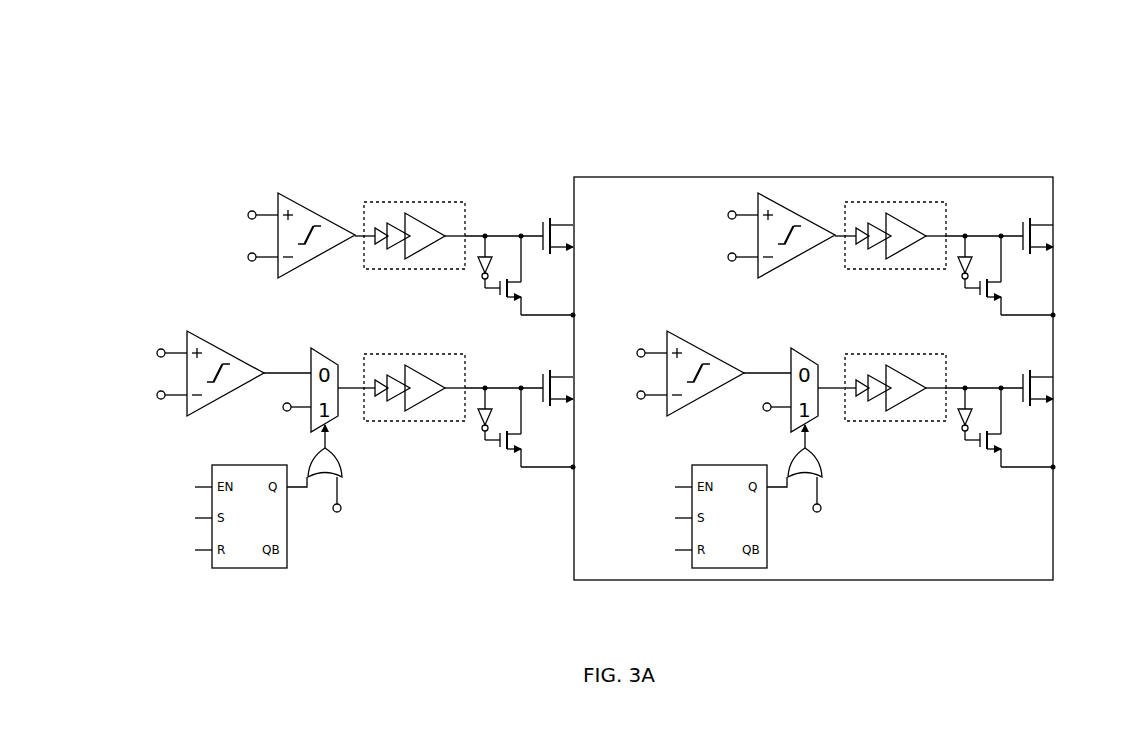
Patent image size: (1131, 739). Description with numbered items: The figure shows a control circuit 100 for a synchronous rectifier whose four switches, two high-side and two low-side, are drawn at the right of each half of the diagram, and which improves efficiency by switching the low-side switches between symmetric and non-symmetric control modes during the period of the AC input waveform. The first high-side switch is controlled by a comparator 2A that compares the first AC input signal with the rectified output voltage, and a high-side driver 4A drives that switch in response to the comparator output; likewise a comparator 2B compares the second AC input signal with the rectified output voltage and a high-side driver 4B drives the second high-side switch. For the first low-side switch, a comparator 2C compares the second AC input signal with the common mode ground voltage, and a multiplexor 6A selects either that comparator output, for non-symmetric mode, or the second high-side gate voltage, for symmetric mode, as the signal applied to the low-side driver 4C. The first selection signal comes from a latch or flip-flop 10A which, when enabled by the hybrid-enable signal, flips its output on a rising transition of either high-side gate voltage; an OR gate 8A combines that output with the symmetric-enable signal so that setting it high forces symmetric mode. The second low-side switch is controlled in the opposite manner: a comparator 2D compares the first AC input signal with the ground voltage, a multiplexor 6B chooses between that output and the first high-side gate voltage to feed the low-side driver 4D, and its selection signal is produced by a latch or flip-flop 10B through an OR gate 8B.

The control circuit 100 is at (213, 115).
The comparator 2A is at (310, 209).
The comparator 2B is at (812, 226).
The comparator 2C is at (208, 341).
The comparator 2D is at (690, 340).
The high-side driver 4A is at (423, 200).
The high-side driver 4B is at (910, 200).
The low-side driver 4C is at (443, 358).
The low-side driver 4D is at (930, 353).
The multiplexor 6A is at (333, 362).
The multiplexor 6B is at (807, 358).
The OR gate 8A is at (342, 465).
The OR gate 8B is at (825, 473).
The latch or flip-flop 10A is at (253, 568).
The latch or flip-flop 10B is at (715, 567).